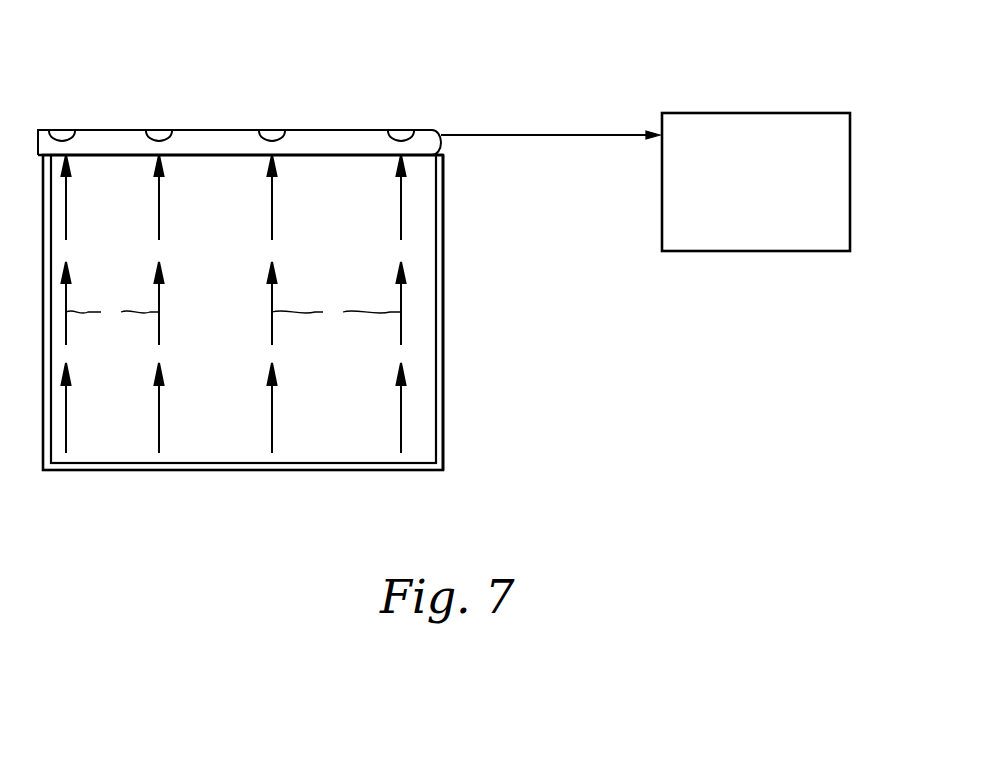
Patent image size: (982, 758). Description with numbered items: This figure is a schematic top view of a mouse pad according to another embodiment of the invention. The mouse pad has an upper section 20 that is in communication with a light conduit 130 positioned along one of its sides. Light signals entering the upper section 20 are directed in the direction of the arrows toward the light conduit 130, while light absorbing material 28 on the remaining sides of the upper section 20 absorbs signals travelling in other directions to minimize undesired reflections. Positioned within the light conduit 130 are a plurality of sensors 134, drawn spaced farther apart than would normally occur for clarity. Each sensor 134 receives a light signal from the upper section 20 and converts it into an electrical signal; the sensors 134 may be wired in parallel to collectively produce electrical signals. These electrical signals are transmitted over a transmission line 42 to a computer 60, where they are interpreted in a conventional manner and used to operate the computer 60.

The upper section 20 is at (420, 340).
The light absorbing material 28 is at (443, 428).
The transmission line 42 is at (551, 138).
The computer 60 is at (765, 252).
The light conduit 130 is at (207, 137).
The sensors 134 is at (152, 133).